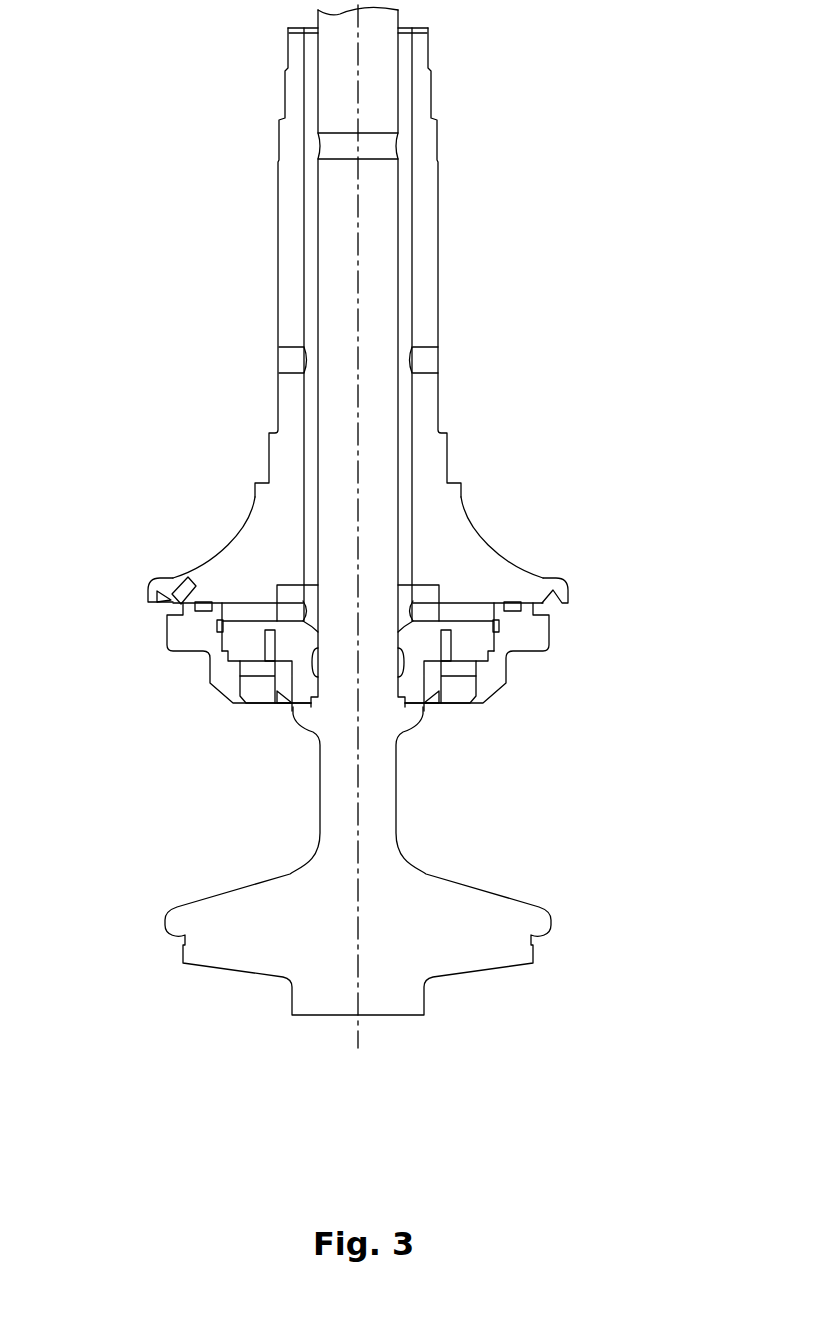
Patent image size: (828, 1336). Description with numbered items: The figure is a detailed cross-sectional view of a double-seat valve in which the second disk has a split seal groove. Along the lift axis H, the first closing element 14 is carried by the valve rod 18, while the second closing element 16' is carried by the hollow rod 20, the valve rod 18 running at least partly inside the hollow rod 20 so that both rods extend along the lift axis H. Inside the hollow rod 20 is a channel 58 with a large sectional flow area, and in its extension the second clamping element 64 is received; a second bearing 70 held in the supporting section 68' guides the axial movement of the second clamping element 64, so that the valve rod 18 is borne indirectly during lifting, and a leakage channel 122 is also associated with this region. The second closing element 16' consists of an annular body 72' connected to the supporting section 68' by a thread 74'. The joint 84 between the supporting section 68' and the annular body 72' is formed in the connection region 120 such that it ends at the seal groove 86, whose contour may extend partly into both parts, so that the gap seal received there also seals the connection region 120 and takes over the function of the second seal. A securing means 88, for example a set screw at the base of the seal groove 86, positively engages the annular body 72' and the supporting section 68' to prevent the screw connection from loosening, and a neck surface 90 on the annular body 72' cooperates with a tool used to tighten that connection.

The first closing element 14 is at (478, 910).
The second closing element 16' is at (440, 599).
The valve rod 18 is at (378, 315).
The hollow rod 20 is at (427, 257).
The channel 58 is at (405, 388).
The second clamping element 64 is at (293, 656).
The supporting section 68' is at (394, 550).
The second bearing 70 is at (483, 613).
The annular body 72' is at (539, 653).
The thread 74' is at (292, 646).
The joint 84 is at (218, 597).
The seal groove 86 is at (168, 612).
The securing means 88 is at (173, 583).
The neck surface 90 is at (208, 667).
The connection region 120 is at (495, 623).
The leakage channel 122 is at (448, 642).
The lift axis H is at (358, 785).